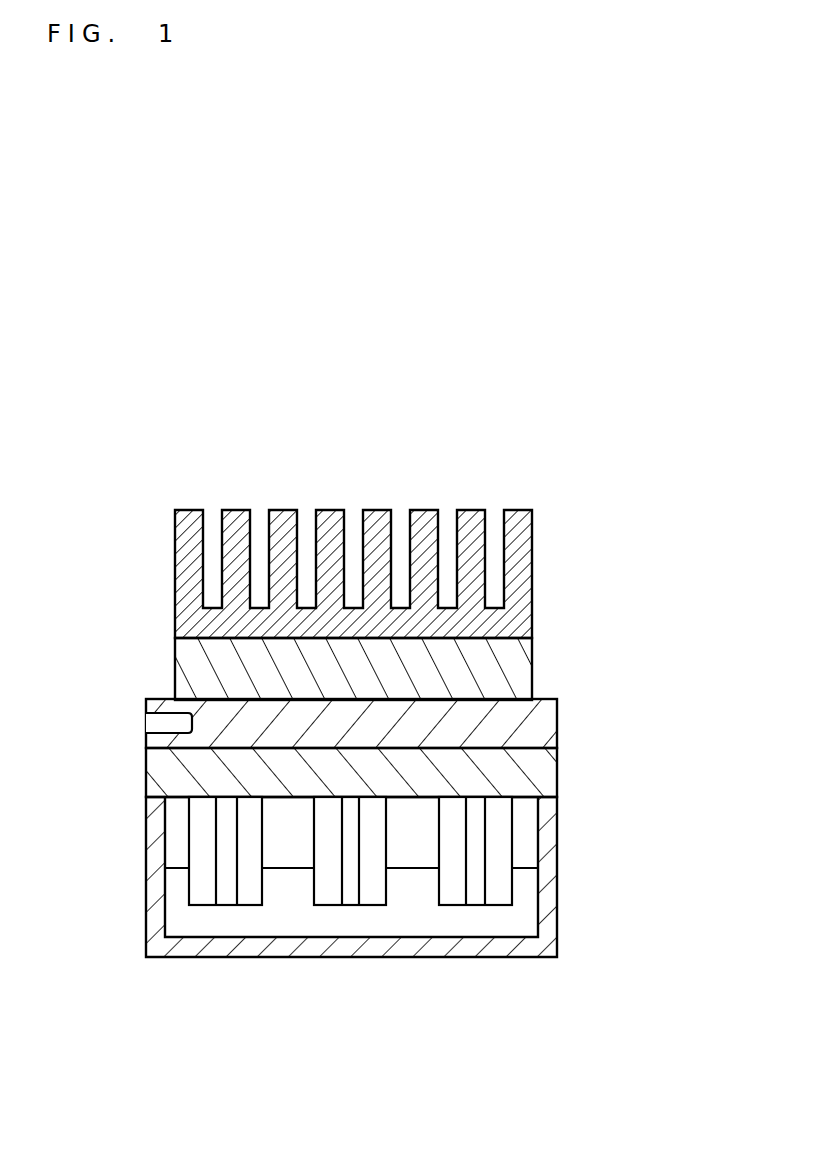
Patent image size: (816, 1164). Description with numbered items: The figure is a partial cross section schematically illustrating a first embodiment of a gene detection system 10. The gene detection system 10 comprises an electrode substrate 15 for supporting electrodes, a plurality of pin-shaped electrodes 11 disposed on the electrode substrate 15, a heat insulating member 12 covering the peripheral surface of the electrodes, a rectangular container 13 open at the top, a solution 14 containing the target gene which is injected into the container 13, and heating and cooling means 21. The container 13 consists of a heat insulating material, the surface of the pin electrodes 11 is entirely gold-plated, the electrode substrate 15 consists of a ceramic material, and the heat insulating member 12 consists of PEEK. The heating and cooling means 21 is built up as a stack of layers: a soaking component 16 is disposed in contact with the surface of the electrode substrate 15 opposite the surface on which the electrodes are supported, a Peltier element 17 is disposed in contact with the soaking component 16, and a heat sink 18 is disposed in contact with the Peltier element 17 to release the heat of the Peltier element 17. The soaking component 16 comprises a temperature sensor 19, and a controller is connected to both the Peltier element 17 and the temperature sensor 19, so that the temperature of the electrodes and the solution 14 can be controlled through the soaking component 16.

The gene detection system 10 is at (694, 456).
The pin-shaped electrodes 11 is at (349, 897).
The heat insulating member 12 is at (374, 897).
The container 13 is at (545, 951).
The solution 14 is at (527, 916).
The electrode substrate 15 is at (541, 776).
The soaking component 16 is at (557, 730).
The Peltier element 17 is at (520, 668).
The heat sink 18 is at (521, 586).
The temperature sensor 19 is at (163, 725).
The heating and cooling means 21 is at (683, 542).